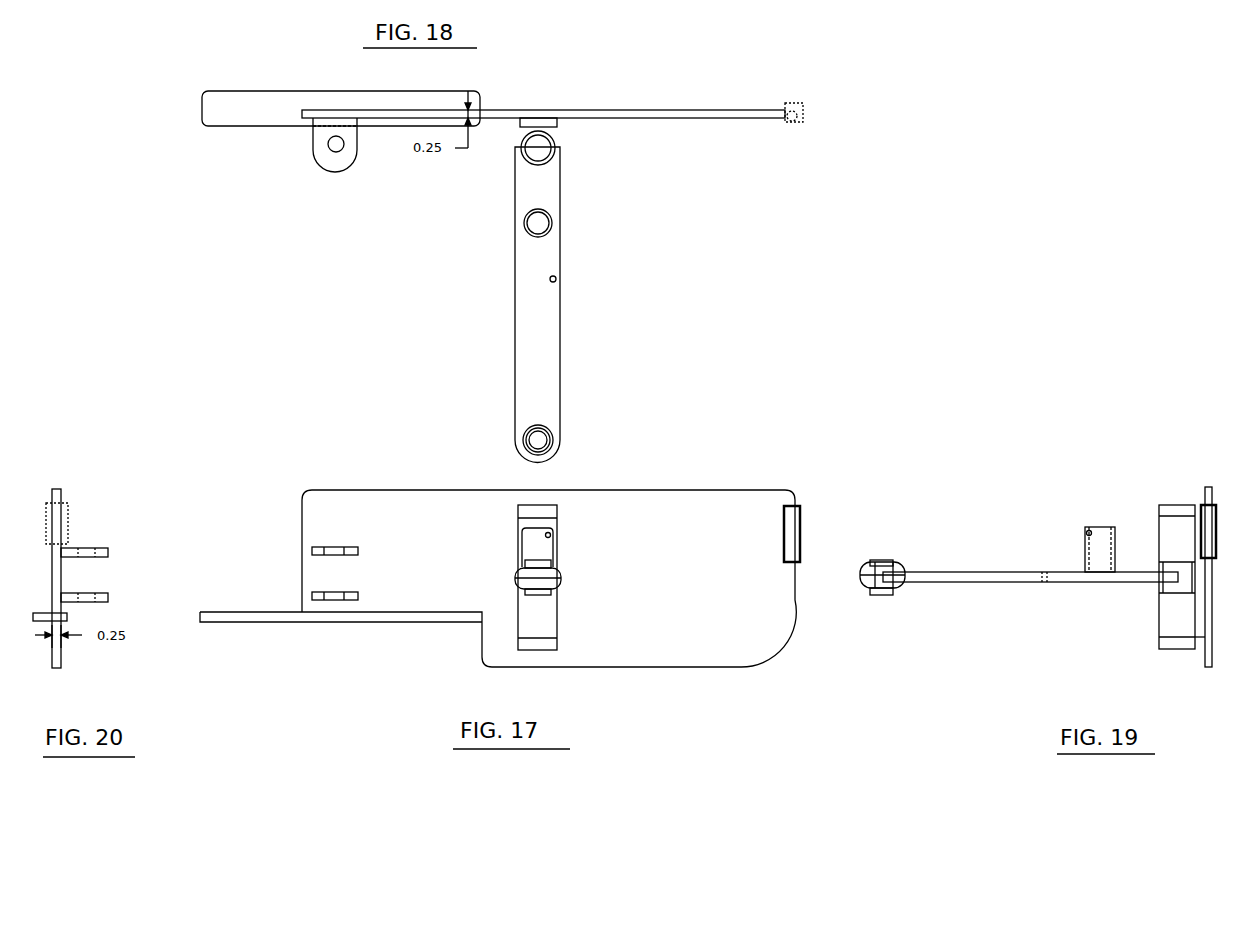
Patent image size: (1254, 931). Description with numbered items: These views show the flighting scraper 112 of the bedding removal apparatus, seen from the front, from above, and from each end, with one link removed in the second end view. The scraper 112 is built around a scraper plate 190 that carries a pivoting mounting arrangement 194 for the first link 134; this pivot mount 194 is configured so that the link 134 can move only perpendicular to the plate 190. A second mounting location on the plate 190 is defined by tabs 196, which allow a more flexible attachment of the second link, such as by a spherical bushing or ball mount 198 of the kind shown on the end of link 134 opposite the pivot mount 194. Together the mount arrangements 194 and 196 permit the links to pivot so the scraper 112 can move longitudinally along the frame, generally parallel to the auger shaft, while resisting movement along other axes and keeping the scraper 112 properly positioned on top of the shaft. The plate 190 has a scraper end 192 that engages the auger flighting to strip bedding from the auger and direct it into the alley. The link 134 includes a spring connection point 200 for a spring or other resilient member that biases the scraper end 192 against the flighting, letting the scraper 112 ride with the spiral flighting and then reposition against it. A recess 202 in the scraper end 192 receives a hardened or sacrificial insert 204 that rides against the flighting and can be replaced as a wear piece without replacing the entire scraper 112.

In FIG. 18, the flighting scraper 112 is at (462, 178).
In FIG. 17, the flighting scraper 112 is at (688, 647).
In FIG. 20, the flighting scraper 112 is at (82, 476).
In FIG. 18, the first link 134 is at (555, 313).
In FIG. 19, the first link 134 is at (977, 580).
In FIG. 18, the scraper plate 190 is at (681, 108).
In FIG. 17, the scraper plate 190 is at (652, 561).
In FIG. 19, the scraper plate 190 is at (1203, 498).
In FIG. 20, the scraper plate 190 is at (58, 566).
In FIG. 18, the scraper end 192 is at (794, 125).
In FIG. 17, the scraper end 192 is at (790, 612).
In FIG. 19, the scraper end 192 is at (1205, 660).
In FIG. 18, the pivoting mounting arrangement 194 is at (544, 148).
In FIG. 17, the pivoting mounting arrangement 194 is at (526, 607).
In FIG. 19, the pivoting mounting arrangement 194 is at (1170, 537).
In FIG. 18, the tabs 196 is at (317, 160).
In FIG. 17, the tabs 196 is at (312, 592).
In FIG. 20, the tabs 196 is at (113, 555).
In FIG. 18, the spherical bushing or ball mount 198 is at (520, 443).
In FIG. 17, the spherical bushing or ball mount 198 is at (561, 578).
In FIG. 19, the spherical bushing or ball mount 198 is at (883, 597).
In FIG. 19, the spring connection point 200 is at (1088, 537).
In FIG. 17, the recess 202 is at (791, 493).
In FIG. 18, the insert 204 is at (803, 108).
In FIG. 17, the insert 204 is at (796, 527).
In FIG. 19, the insert 204 is at (1210, 525).
In FIG. 20, the insert 204 is at (55, 510).